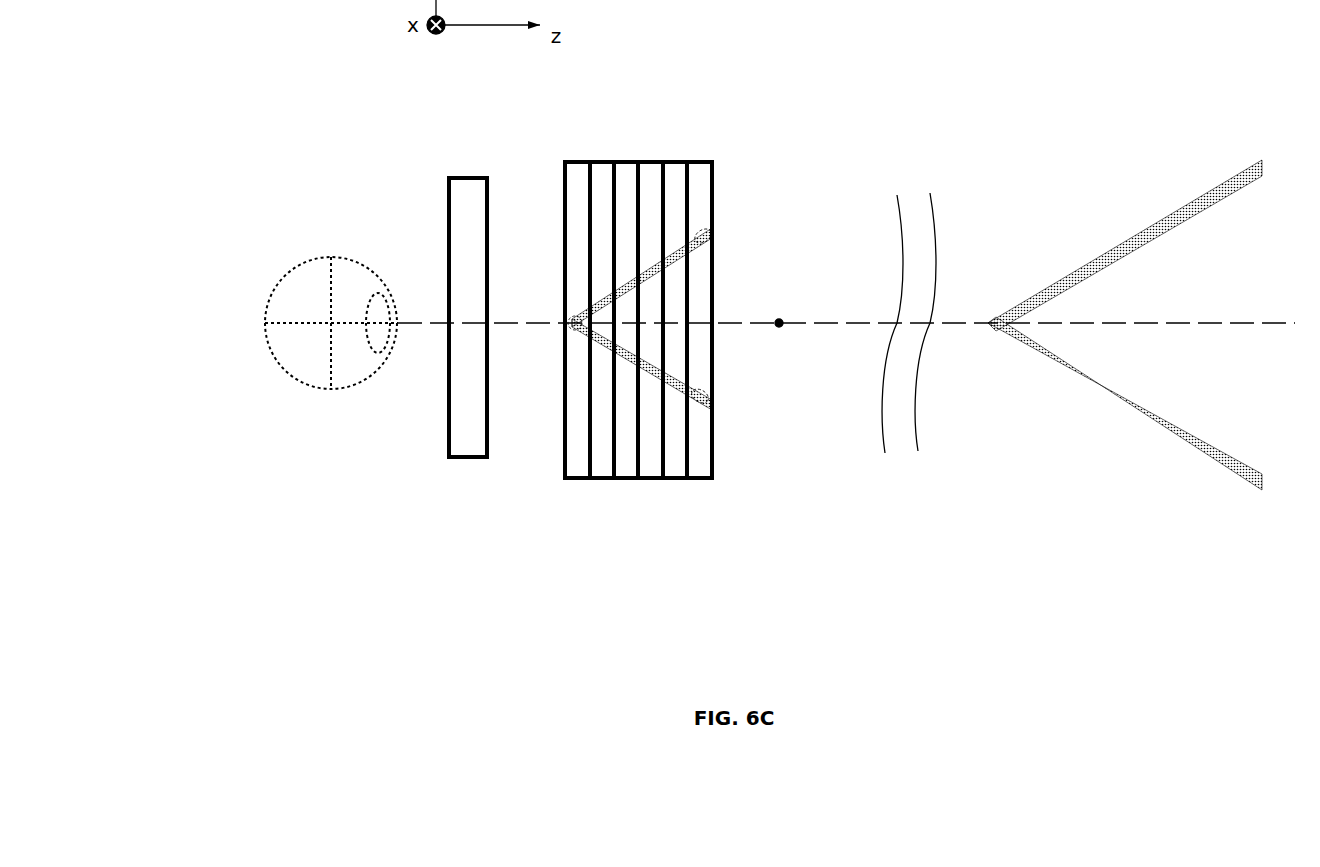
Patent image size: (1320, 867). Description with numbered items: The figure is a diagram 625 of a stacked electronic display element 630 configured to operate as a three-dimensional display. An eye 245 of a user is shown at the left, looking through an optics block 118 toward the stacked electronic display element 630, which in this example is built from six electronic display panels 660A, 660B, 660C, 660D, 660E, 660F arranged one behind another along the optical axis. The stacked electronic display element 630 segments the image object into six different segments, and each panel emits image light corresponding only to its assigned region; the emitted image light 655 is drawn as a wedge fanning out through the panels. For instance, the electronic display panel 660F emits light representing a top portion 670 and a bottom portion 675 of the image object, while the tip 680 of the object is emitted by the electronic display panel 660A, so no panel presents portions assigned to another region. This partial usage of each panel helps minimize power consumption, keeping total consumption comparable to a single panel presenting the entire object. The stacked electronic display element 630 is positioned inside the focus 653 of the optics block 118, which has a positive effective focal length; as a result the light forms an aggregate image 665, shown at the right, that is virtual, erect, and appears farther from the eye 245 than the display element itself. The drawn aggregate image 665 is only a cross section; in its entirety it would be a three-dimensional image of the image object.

The diagram 625 is at (736, 218).
The eye 245 is at (297, 267).
The optics block 118 is at (448, 178).
The stacked electronic display element 630 is at (671, 329).
The emitted image light 655 is at (616, 319).
The top portion 670 is at (703, 233).
The bottom portion 675 is at (699, 387).
The tip 680 is at (570, 334).
The focus 653 is at (811, 355).
The aggregate image 665 is at (1172, 213).
The electronic display panel 660A is at (565, 462).
The electronic display panel 660B is at (598, 466).
The electronic display panel 660C is at (627, 464).
The electronic display panel 660D is at (651, 462).
The electronic display panel 660E is at (675, 464).
The electronic display panel 660F is at (697, 440).